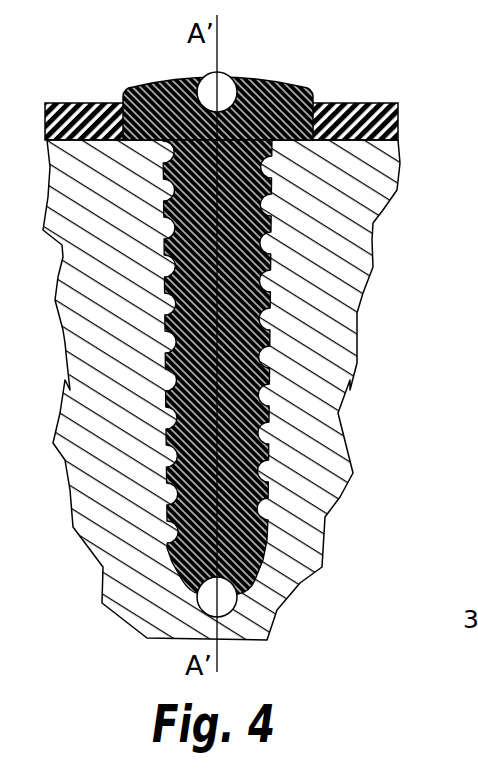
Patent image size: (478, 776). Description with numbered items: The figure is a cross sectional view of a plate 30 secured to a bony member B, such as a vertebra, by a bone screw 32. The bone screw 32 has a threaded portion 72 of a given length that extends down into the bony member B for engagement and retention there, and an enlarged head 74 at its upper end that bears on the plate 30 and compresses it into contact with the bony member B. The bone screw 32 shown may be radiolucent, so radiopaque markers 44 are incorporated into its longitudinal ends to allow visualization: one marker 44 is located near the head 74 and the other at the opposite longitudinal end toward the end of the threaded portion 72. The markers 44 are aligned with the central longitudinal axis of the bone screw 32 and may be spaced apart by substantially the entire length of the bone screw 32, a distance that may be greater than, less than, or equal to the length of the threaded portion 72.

The plate 30 is at (375, 104).
The bone screw 32 is at (257, 300).
The enlarged head 74 is at (147, 79).
The threaded portion 72 is at (270, 302).
The radiopaque markers 44 is at (228, 80).
The bony member B is at (327, 497).